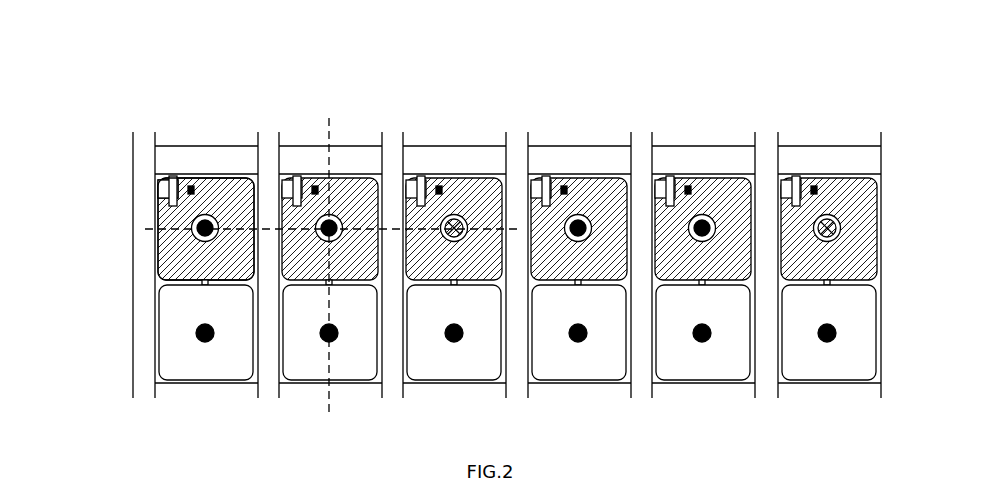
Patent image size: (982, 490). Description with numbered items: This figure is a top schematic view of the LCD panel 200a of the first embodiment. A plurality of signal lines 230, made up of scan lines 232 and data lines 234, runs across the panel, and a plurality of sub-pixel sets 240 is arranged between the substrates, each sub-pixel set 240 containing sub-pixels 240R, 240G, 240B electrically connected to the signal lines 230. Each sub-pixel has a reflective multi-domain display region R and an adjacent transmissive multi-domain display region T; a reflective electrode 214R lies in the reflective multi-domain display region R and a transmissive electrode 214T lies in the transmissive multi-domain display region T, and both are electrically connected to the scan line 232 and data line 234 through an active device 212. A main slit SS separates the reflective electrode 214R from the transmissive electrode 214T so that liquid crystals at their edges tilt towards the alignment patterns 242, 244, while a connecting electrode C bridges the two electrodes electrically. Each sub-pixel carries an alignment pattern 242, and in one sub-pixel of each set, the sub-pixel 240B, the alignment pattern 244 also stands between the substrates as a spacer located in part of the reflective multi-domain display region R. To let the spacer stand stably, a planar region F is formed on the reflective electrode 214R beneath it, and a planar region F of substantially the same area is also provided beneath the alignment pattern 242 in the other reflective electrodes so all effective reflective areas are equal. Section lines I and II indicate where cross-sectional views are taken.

The LCD panel 200a is at (806, 447).
The active device 212 is at (152, 198).
The reflective electrode 214R is at (180, 263).
The transmissive electrode 214T is at (173, 339).
The signal lines 230 is at (155, 57).
The scan lines 232 is at (168, 157).
The data lines 234 is at (142, 137).
The sub-pixel set 240 is at (205, 62).
The sub-pixel 240R is at (155, 122).
The sub-pixel 240G is at (382, 122).
The sub-pixel 240B is at (403, 122).
The alignment pattern 242 is at (205, 342).
The alignment pattern 244 is at (462, 238).
The planar region F is at (450, 240).
The connecting electrode C is at (704, 285).
The main slit SS is at (722, 296).
The reflective multi-domain display region R is at (888, 178).
The transmissive multi-domain display region T is at (888, 285).
The I-I section line I is at (145, 229).
The II-II section line II is at (331, 120).